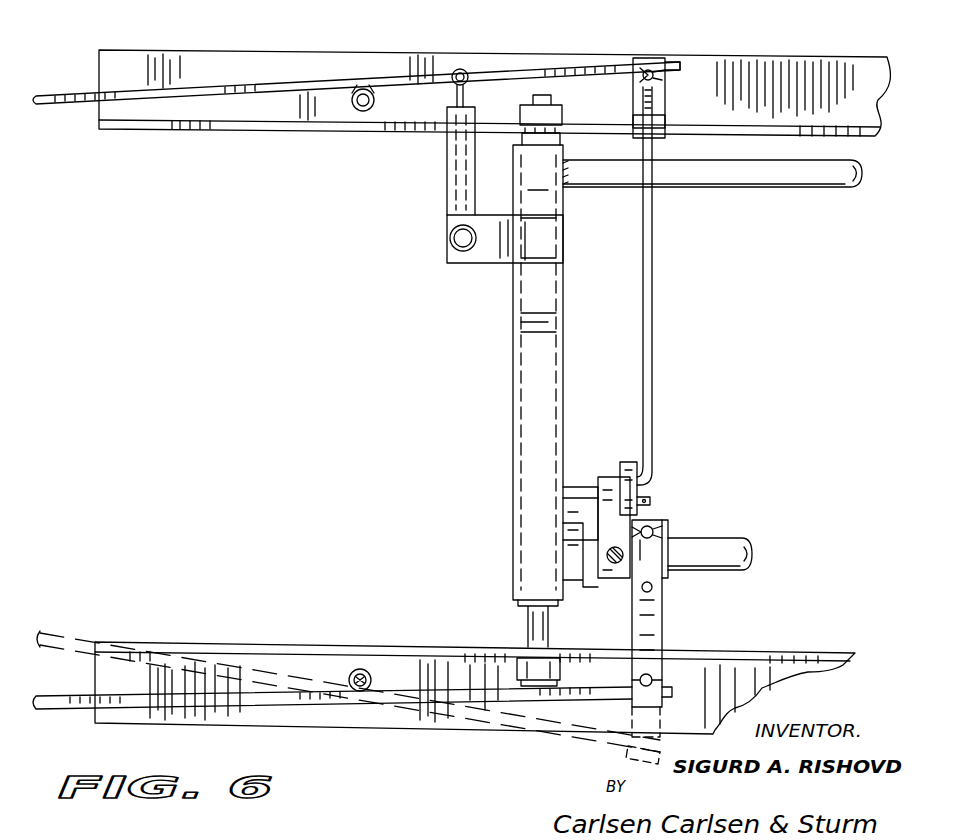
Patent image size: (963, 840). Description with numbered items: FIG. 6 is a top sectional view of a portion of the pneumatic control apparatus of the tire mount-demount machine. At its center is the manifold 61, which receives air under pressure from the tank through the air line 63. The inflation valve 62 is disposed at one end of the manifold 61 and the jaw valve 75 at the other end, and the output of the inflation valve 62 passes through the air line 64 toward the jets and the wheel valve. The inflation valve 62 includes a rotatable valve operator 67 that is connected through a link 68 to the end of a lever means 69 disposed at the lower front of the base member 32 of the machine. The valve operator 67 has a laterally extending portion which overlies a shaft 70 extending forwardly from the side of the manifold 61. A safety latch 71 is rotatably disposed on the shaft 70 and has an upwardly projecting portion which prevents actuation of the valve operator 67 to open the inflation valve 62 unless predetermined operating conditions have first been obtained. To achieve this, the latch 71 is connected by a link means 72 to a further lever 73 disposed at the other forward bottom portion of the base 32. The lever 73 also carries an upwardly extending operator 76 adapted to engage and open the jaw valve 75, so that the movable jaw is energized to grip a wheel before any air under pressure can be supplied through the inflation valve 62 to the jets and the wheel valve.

The base member 32 is at (300, 128).
The manifold 61 is at (527, 377).
The inflation valve 62 is at (668, 515).
The air line 63 is at (808, 186).
The air line 64 is at (710, 545).
The valve operator 67 is at (618, 578).
The link 68 is at (658, 630).
The lever means 69 is at (485, 690).
The shaft 70 is at (585, 490).
The safety latch 71 is at (633, 460).
The link means 72 is at (650, 338).
The lever 73 is at (255, 87).
The jaw valve 75 is at (472, 263).
The operator 76 is at (455, 70).